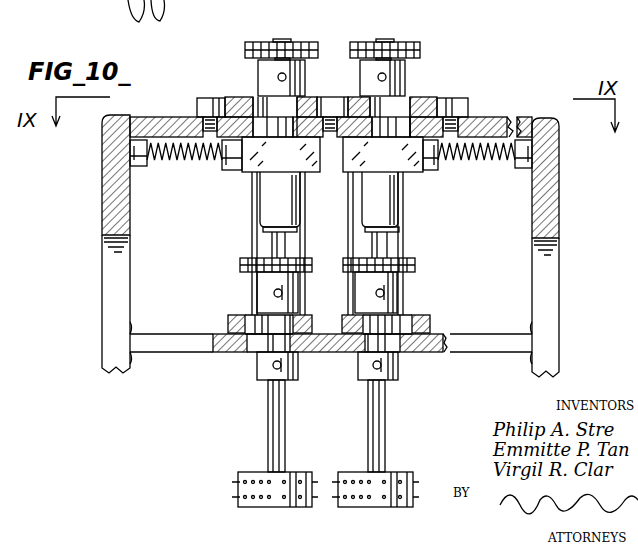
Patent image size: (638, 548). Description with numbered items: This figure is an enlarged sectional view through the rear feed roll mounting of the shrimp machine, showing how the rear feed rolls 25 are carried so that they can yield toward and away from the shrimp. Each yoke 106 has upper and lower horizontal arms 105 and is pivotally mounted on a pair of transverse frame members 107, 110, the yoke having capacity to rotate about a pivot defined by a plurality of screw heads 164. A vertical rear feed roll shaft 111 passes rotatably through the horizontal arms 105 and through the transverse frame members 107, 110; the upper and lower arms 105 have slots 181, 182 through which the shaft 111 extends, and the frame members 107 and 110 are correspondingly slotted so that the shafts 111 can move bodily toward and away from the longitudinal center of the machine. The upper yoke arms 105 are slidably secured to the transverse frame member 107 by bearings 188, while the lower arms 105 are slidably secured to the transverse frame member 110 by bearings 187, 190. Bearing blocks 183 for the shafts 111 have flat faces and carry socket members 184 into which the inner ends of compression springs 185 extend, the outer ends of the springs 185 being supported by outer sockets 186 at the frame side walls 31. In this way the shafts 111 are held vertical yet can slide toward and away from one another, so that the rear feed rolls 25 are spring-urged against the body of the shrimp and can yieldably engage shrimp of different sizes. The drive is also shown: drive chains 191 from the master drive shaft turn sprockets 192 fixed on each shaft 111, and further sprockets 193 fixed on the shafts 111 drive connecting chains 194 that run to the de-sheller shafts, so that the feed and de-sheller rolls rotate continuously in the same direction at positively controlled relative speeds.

The rear feed roll 25 is at (258, 475).
The housing side wall 31 is at (108, 216).
The horizontal arm 105 is at (232, 97).
The yoke 106 is at (252, 242).
The transverse frame member 107 is at (523, 126).
The transverse frame member 110 is at (498, 352).
The rear feed roll shaft 111 is at (272, 418).
The screw head 164 is at (201, 106).
The slot 181 is at (247, 97).
The slot 182 is at (250, 340).
The bearing block 183 is at (332, 154).
The socket member 184 is at (232, 172).
The compression spring 185 is at (195, 165).
The outer socket 186 is at (138, 168).
The bearing 187 is at (262, 287).
The bearing 188 is at (360, 72).
The bearing 190 is at (260, 372).
The drive chain 191 is at (350, 50).
The sprocket 192 is at (370, 40).
The sprocket 193 is at (362, 258).
The connecting chain 194 is at (328, 308).